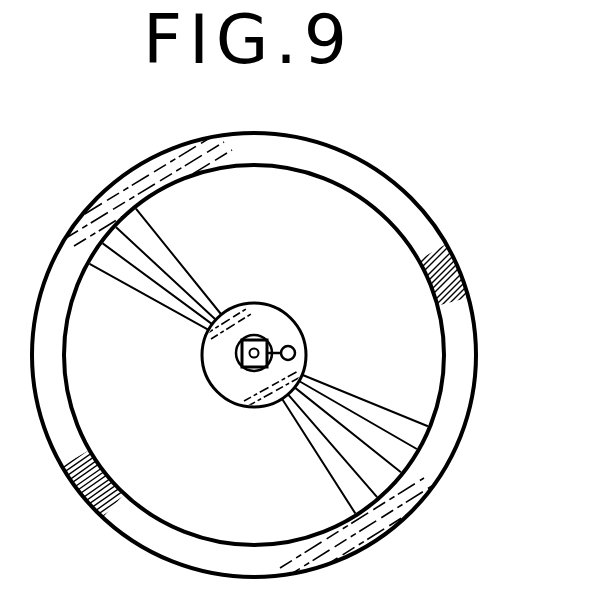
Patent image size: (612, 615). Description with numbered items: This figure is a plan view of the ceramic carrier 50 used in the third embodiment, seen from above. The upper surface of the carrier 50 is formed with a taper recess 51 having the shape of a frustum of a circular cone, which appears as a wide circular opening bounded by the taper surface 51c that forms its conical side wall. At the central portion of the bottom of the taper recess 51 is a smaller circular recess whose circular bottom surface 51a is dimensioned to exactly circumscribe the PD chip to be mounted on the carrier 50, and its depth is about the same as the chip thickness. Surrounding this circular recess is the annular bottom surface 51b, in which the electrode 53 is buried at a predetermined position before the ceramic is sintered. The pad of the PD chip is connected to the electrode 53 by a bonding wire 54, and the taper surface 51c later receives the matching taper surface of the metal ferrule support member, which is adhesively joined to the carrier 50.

The ceramic carrier 50 is at (425, 228).
The taper recess 51 is at (210, 394).
The circular bottom surface 51a is at (248, 368).
The annular bottom surface 51b is at (210, 346).
The taper surface 51c is at (428, 396).
The electrode 53 is at (297, 345).
The bonding wire 54 is at (270, 349).